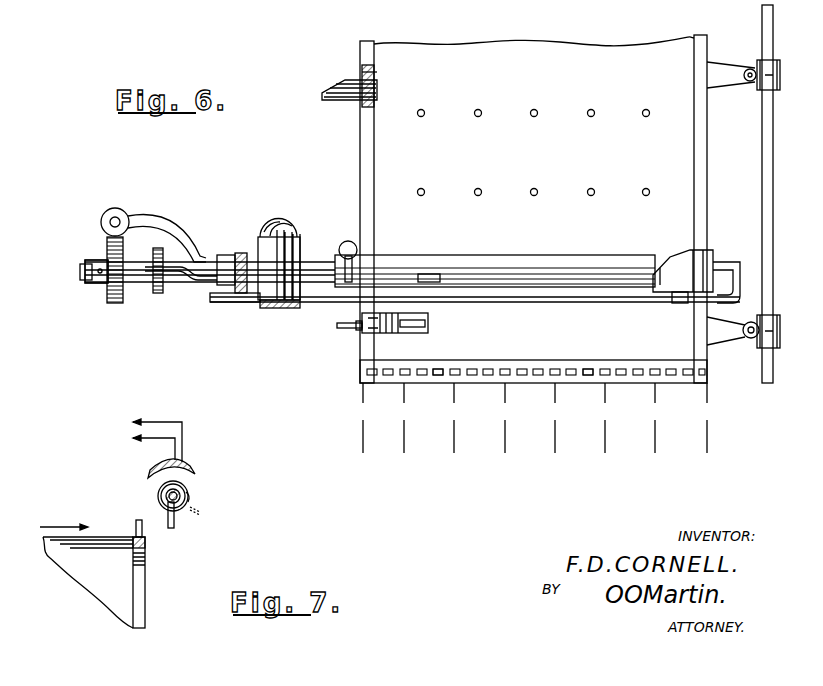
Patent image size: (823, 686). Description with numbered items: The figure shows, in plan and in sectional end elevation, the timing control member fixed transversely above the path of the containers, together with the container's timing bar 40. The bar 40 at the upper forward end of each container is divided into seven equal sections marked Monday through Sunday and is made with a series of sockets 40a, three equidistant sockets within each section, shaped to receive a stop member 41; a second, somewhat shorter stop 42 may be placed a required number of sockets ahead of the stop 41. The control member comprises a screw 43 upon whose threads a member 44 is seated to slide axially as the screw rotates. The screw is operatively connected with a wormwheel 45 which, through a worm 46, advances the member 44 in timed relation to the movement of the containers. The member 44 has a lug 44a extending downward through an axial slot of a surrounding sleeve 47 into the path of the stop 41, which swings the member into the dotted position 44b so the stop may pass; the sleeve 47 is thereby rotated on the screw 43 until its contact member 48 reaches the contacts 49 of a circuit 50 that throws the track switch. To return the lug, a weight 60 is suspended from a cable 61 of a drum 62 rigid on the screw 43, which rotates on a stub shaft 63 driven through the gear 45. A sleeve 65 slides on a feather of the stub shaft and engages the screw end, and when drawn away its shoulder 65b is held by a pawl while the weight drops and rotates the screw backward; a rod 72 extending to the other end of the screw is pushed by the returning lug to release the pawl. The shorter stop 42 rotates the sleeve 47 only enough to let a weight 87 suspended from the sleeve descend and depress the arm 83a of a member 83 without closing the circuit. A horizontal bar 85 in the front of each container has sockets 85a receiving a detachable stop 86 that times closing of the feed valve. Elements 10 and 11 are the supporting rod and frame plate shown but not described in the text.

In FIG. 6, the vertical rod 10 is at (778, 235).
In FIG. 7, the frame plate 11 is at (128, 616).
In FIG. 6, the bar 40 is at (380, 382).
In FIG. 7, the bar 40 is at (142, 547).
In FIG. 6, the sockets 40a is at (443, 376).
In FIG. 6, the stop member 41 is at (548, 376).
In FIG. 7, the stop member 41 is at (144, 534).
In FIG. 6, the second stop 42 is at (597, 376).
In FIG. 6, the screw 43 is at (312, 264).
In FIG. 7, the screw 43 is at (167, 501).
In FIG. 7, the member 44 is at (166, 496).
In FIG. 7, the lug 44a is at (176, 514).
In FIG. 7, the dotted-outline position 44b is at (203, 508).
In FIG. 6, the wormwheel 45 is at (110, 290).
In FIG. 6, the worm 46 is at (120, 208).
In FIG. 7, the sleeve 47 is at (160, 488).
In FIG. 6, the contact member 48 is at (430, 274).
In FIG. 7, the contact member 48 is at (190, 492).
In FIG. 7, the contacts 49 is at (182, 468).
In FIG. 7, the circuit 50 is at (157, 431).
In FIG. 6, the weight 60 is at (270, 220).
In FIG. 6, the cable 61 is at (281, 226).
In FIG. 6, the drum 62 is at (276, 310).
In FIG. 6, the stub shaft 63 is at (135, 278).
In FIG. 6, the sleeve 65 is at (184, 268).
In FIG. 6, the shoulder 65b is at (158, 248).
In FIG. 6, the rod 72 is at (326, 302).
In FIG. 6, the member 83 is at (375, 328).
In FIG. 6, the arm 83a is at (350, 330).
In FIG. 6, the horizontal bar 85 is at (368, 115).
In FIG. 6, the sockets 85a is at (375, 72).
In FIG. 6, the detachable stop 86 is at (343, 86).
In FIG. 6, the weight 87 is at (347, 241).